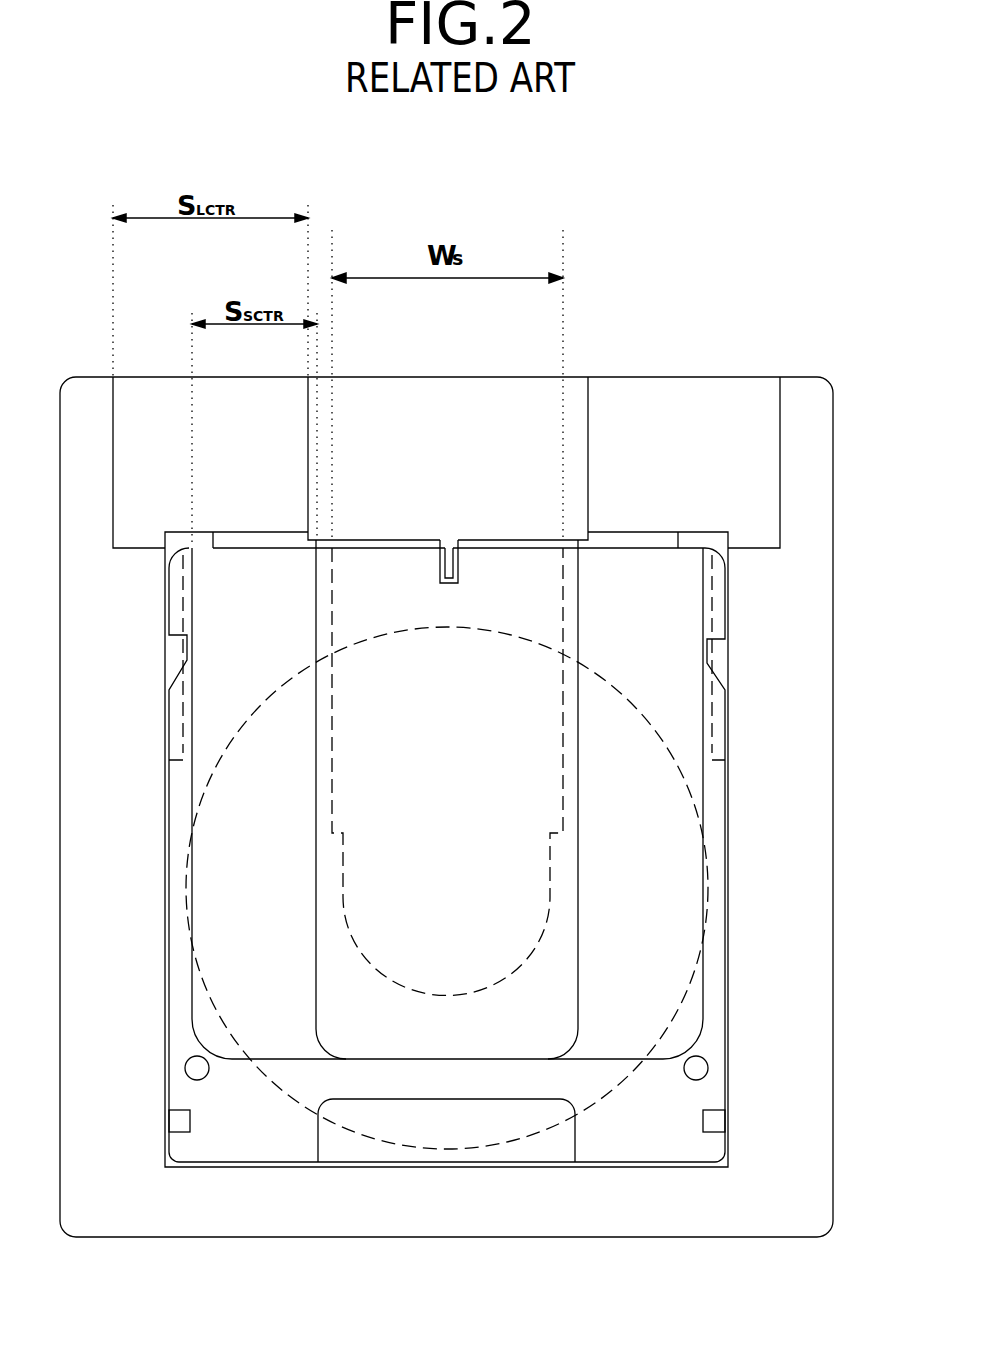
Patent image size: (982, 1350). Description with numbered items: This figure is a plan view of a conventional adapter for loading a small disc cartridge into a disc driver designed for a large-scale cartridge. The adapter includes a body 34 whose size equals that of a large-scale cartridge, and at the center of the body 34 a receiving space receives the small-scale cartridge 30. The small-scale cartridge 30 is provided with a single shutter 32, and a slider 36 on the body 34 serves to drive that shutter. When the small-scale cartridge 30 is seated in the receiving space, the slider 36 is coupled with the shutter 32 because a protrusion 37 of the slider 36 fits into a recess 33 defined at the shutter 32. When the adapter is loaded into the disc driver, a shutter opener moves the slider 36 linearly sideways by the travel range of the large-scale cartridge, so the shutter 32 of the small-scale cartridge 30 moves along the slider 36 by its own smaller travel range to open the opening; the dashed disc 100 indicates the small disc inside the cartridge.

The small-scale cartridge 30 is at (720, 722).
The shutter 32 is at (316, 603).
The recess 33 is at (440, 570).
The body 34 is at (815, 567).
The slider 36 is at (508, 383).
The protrusion 37 is at (450, 552).
The disc drive 100 is at (285, 733).